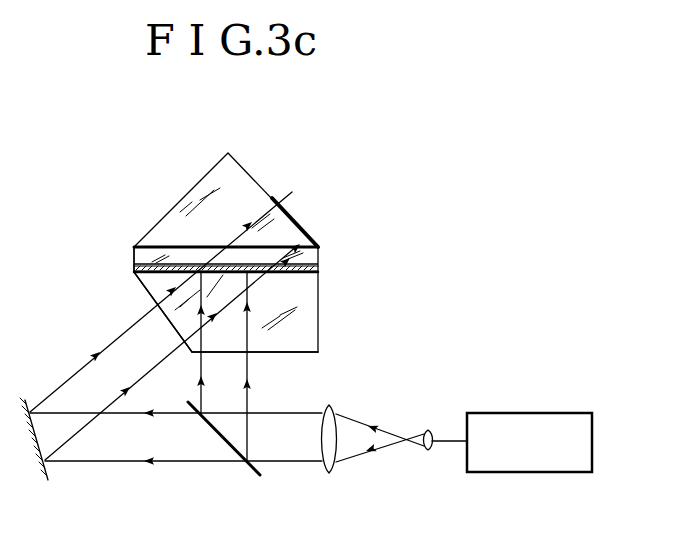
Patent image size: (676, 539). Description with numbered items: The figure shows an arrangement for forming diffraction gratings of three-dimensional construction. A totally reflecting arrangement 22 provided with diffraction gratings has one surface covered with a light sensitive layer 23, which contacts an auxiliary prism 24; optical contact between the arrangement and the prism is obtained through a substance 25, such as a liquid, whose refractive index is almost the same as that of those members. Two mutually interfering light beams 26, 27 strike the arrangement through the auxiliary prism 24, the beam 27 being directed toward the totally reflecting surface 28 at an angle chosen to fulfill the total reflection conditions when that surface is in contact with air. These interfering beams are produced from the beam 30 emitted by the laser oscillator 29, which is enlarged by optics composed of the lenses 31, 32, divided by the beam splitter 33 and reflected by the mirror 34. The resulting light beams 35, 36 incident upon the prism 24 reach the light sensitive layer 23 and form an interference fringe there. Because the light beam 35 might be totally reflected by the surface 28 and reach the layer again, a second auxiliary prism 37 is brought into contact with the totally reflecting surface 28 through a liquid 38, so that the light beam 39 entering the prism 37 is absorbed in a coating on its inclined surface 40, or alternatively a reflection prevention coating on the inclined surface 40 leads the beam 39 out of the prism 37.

The totally reflecting arrangement 22 is at (310, 259).
The light sensitive layer 23 is at (315, 271).
The auxiliary prism 24 is at (307, 342).
The substance 25 is at (300, 274).
The light beam 26 is at (247, 395).
The light beam 27 is at (68, 380).
The totally reflecting surface 28 is at (134, 249).
The laser oscillator 29 is at (530, 462).
The beam 30 is at (448, 441).
The lens 31 is at (428, 450).
The lens 32 is at (331, 473).
The beam splitter 33 is at (257, 472).
The mirror 34 is at (47, 480).
The light beam 35 is at (150, 296).
The light beam 36 is at (245, 337).
The second auxiliary prism 37 is at (238, 180).
The liquid 38 is at (313, 247).
The light beam 39 is at (230, 238).
The inclined surface 40 is at (290, 214).